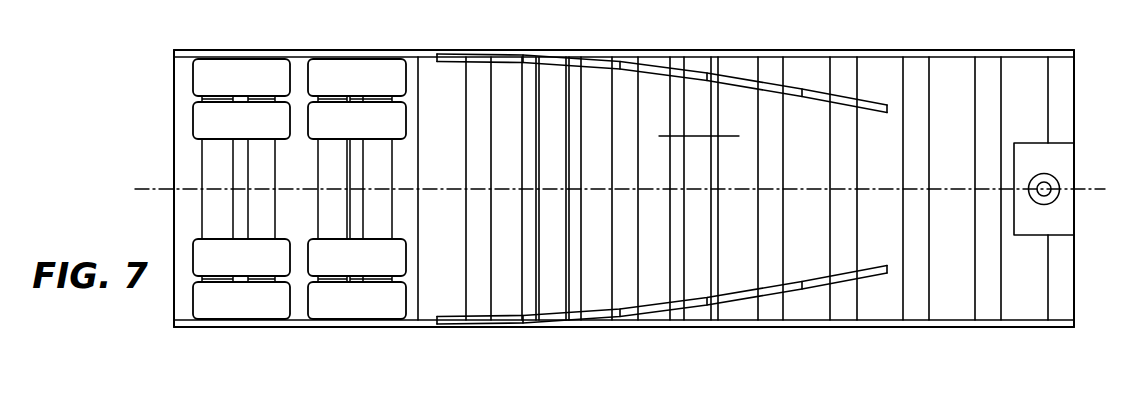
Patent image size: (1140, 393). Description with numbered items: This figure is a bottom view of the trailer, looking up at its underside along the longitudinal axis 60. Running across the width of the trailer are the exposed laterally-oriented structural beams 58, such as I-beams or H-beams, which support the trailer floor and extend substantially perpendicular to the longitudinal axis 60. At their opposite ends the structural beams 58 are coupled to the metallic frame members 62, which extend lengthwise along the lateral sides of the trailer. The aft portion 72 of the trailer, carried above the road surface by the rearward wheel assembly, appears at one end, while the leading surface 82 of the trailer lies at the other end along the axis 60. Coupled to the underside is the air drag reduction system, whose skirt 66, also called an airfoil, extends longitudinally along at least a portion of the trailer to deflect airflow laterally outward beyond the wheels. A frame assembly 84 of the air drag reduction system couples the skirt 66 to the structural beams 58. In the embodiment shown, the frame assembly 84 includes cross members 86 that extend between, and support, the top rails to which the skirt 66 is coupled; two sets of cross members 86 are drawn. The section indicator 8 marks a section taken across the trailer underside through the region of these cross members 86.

The section line 8- 8 is at (659, 130).
The structural beams 58 is at (917, 88).
The longitudinal axis 60 is at (146, 188).
The metallic frame members 62 is at (1042, 52).
The skirt 66 is at (788, 82).
The aft portion 72 is at (174, 95).
The leading surface 82 is at (1074, 125).
The frame assembly 84 is at (502, 119).
The cross members 86 is at (573, 222).